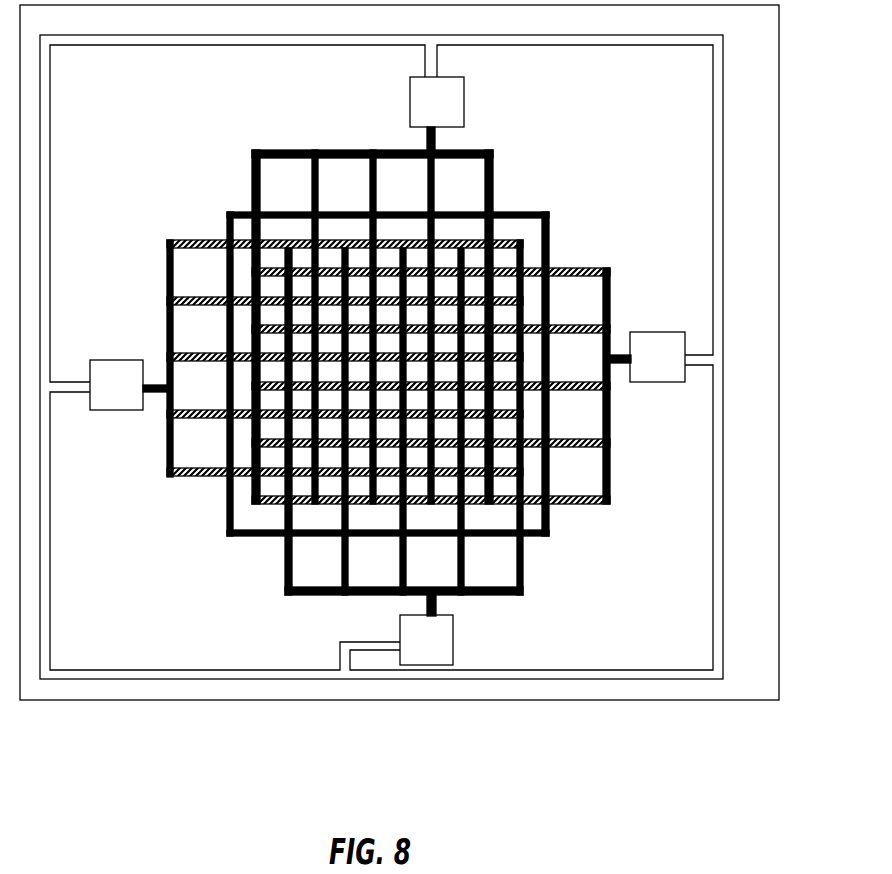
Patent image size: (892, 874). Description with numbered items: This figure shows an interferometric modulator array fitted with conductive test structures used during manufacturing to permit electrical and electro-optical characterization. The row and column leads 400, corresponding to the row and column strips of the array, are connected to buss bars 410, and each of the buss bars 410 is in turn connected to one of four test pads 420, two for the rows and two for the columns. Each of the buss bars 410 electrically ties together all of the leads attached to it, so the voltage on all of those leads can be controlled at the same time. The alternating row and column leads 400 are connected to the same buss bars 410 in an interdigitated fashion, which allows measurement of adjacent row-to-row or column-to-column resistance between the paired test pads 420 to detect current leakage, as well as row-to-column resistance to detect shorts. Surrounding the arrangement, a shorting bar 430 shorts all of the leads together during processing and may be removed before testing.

The row and column leads 400 is at (493, 170).
The buss bars 410 is at (268, 150).
The test pads 420 is at (464, 92).
The shorting bar 430 is at (723, 130).